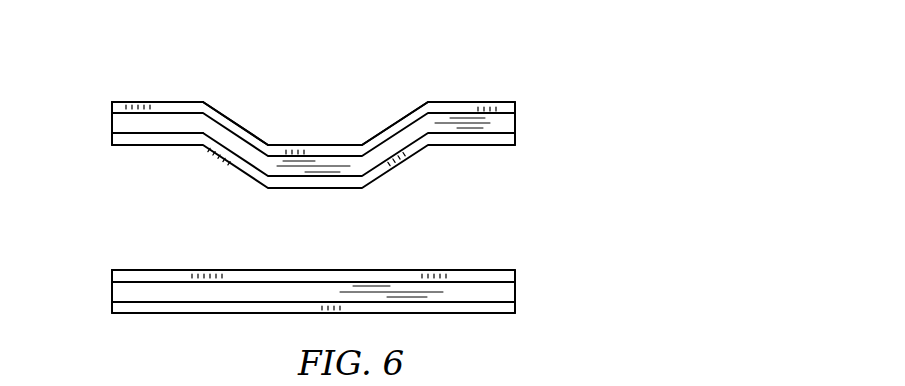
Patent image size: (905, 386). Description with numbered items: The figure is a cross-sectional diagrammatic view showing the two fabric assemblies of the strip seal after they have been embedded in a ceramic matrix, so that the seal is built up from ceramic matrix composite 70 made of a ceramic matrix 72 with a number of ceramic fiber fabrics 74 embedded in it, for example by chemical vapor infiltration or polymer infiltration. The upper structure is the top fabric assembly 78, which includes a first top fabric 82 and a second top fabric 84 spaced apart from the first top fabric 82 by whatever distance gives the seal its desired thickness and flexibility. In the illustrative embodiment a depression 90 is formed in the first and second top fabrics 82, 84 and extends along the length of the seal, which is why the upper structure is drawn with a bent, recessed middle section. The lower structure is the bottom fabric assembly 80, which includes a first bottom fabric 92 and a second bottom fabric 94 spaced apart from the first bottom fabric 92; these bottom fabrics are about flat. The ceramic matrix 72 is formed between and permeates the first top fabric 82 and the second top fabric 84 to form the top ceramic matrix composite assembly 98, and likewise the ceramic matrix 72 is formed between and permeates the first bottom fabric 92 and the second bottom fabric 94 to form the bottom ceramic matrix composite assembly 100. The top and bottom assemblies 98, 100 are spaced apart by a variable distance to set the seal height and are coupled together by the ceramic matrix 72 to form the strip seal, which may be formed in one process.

The ceramic matrix composite 70 is at (586, 259).
The ceramic matrix 72 is at (513, 123).
The ceramic fiber fabrics 74 is at (515, 105).
The top fabric assembly 78 is at (177, 66).
The bottom fabric assembly 80 is at (206, 235).
The first top fabric 82 is at (153, 108).
The second top fabric 84 is at (168, 133).
The depression 90 is at (308, 118).
The first bottom fabric 92 is at (163, 277).
The second bottom fabric 94 is at (163, 302).
The top ceramic matrix composite assembly 98 is at (269, 94).
The bottom ceramic matrix composite assembly 100 is at (343, 241).